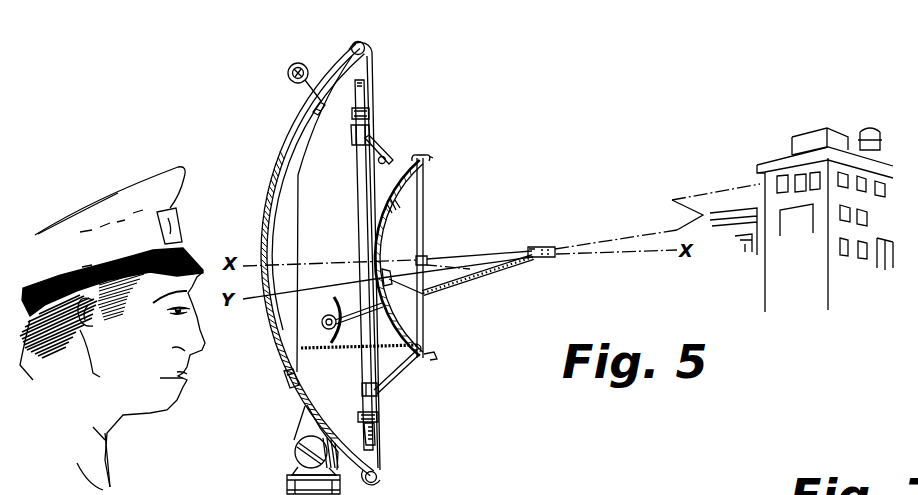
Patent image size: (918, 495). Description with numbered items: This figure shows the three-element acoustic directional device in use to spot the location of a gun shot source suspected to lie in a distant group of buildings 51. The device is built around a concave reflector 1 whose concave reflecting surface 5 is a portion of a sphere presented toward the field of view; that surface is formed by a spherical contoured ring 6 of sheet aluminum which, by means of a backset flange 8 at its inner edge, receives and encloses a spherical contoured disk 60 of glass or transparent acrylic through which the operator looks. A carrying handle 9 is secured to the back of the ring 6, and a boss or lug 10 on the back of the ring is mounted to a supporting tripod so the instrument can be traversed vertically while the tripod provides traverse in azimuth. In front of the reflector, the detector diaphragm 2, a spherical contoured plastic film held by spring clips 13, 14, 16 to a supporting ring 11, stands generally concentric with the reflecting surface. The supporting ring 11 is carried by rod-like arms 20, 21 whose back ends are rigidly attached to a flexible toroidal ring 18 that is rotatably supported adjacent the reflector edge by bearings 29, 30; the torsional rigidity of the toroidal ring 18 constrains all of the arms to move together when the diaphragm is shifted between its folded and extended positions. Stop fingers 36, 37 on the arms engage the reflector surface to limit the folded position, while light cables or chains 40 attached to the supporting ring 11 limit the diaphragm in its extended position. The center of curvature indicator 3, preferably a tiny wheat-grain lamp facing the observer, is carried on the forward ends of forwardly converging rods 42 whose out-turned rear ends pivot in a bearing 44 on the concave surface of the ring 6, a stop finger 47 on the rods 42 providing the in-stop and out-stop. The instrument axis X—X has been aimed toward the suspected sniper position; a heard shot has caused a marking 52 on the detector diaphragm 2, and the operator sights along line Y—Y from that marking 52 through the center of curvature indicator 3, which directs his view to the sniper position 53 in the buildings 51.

The concave reflector 1 is at (337, 64).
The detector diaphragm 2 is at (403, 197).
The center of curvature indicator 3 is at (545, 247).
The concave reflecting surface 5 is at (314, 108).
The spherical contoured ring 6 is at (298, 128).
The backset flange 8 is at (284, 380).
The carrying handle 9 is at (301, 64).
The boss or lug 10 is at (296, 447).
The supporting ring 11 is at (427, 338).
The spring clip 13 is at (426, 257).
The spring clip 14 is at (423, 158).
The spring clip 16 is at (436, 358).
The flexible toroidal ring 18 is at (376, 440).
The rod-like arm 20 is at (384, 160).
The rod-like arm 21 is at (416, 372).
The bearing 29 is at (370, 112).
The bearing 30 is at (379, 417).
The stop finger 36 is at (388, 160).
The stop finger 37 is at (378, 390).
The light cables or chains 40 is at (345, 353).
The forwardly converging rods 42 is at (479, 280).
The bearing 44 is at (381, 283).
The stop finger 47 is at (336, 303).
The group of buildings 51 is at (778, 276).
The marking 52 is at (389, 281).
The sniper position 53 is at (813, 166).
The spherical contoured disk 60 is at (266, 206).